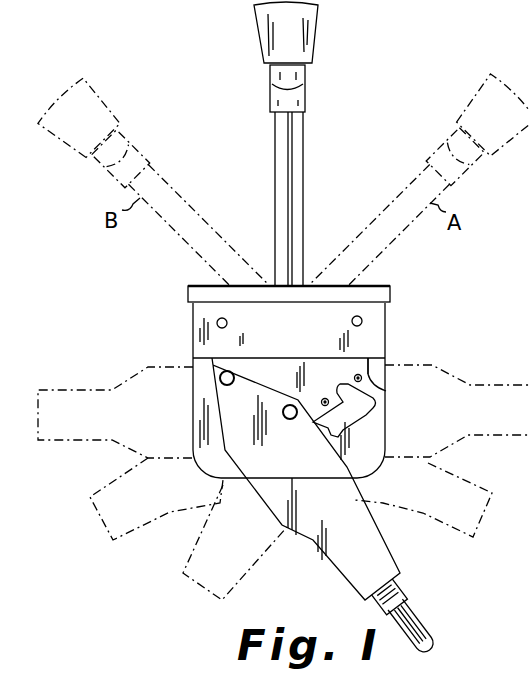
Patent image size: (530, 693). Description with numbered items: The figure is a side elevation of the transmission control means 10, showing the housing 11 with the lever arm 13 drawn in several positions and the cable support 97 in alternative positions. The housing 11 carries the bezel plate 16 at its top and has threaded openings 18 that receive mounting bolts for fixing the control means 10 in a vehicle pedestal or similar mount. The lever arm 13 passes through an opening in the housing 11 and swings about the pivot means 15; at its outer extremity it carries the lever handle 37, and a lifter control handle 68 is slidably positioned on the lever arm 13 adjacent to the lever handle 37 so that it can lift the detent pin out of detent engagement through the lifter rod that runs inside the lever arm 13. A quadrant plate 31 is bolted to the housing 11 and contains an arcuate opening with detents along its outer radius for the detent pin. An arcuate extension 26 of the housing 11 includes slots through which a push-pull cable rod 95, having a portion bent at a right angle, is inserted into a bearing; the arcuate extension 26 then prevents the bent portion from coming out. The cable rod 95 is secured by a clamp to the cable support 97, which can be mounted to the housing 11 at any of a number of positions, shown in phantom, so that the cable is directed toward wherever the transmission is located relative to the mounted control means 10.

The control means 10 is at (366, 183).
The housing 11 is at (189, 318).
The lever arm 13 is at (275, 206).
The pivot means 15 is at (303, 285).
The bezel plate 16 is at (392, 294).
The threaded openings 18 is at (228, 323).
The arcuate extension 26 is at (387, 390).
The quadrant plate 31 is at (380, 433).
The lever handle 37 is at (316, 28).
The lifter control handle 68 is at (300, 84).
The push-pull cable rod 95 is at (405, 604).
The cable support 97 is at (392, 556).